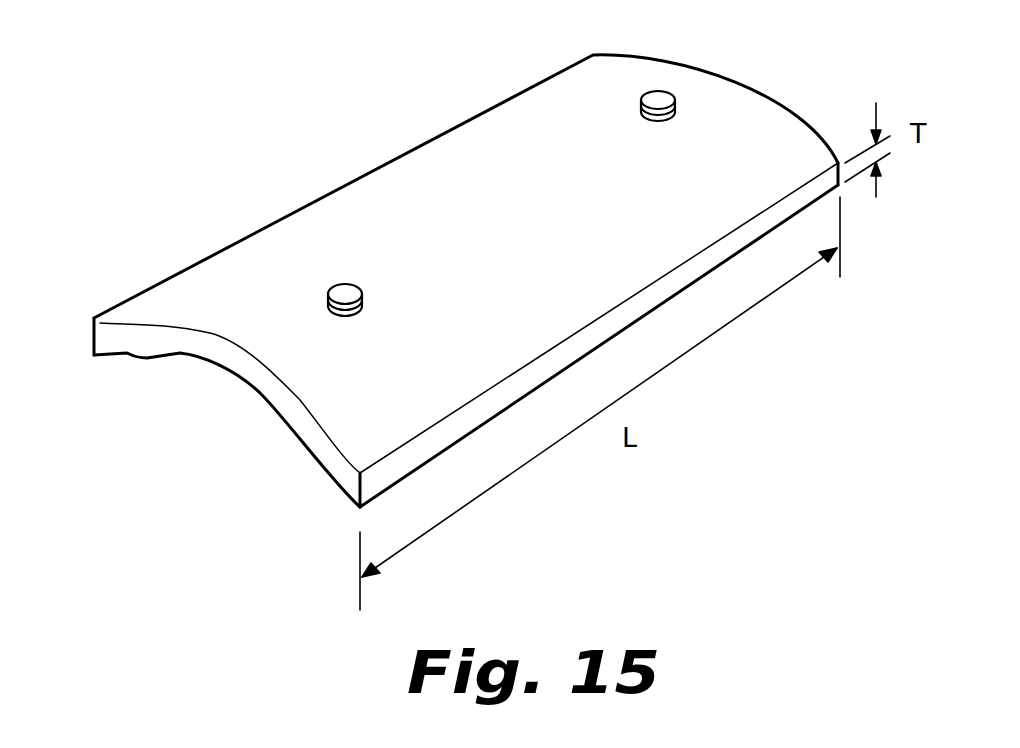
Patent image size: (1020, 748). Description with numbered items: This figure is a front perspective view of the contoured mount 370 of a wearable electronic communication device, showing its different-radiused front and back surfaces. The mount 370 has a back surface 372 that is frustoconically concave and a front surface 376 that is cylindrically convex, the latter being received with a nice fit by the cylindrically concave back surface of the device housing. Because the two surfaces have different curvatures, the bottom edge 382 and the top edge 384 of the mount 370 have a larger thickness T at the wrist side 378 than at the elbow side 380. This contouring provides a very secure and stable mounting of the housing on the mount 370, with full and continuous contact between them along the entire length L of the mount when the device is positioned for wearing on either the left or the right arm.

The mount 370 is at (374, 165).
The back surface 372 is at (263, 390).
The front surface 376 is at (280, 247).
The wrist side 378 is at (345, 479).
The elbow side 380 is at (845, 164).
The bottom edge 382 is at (433, 445).
The top edge 384 is at (93, 340).